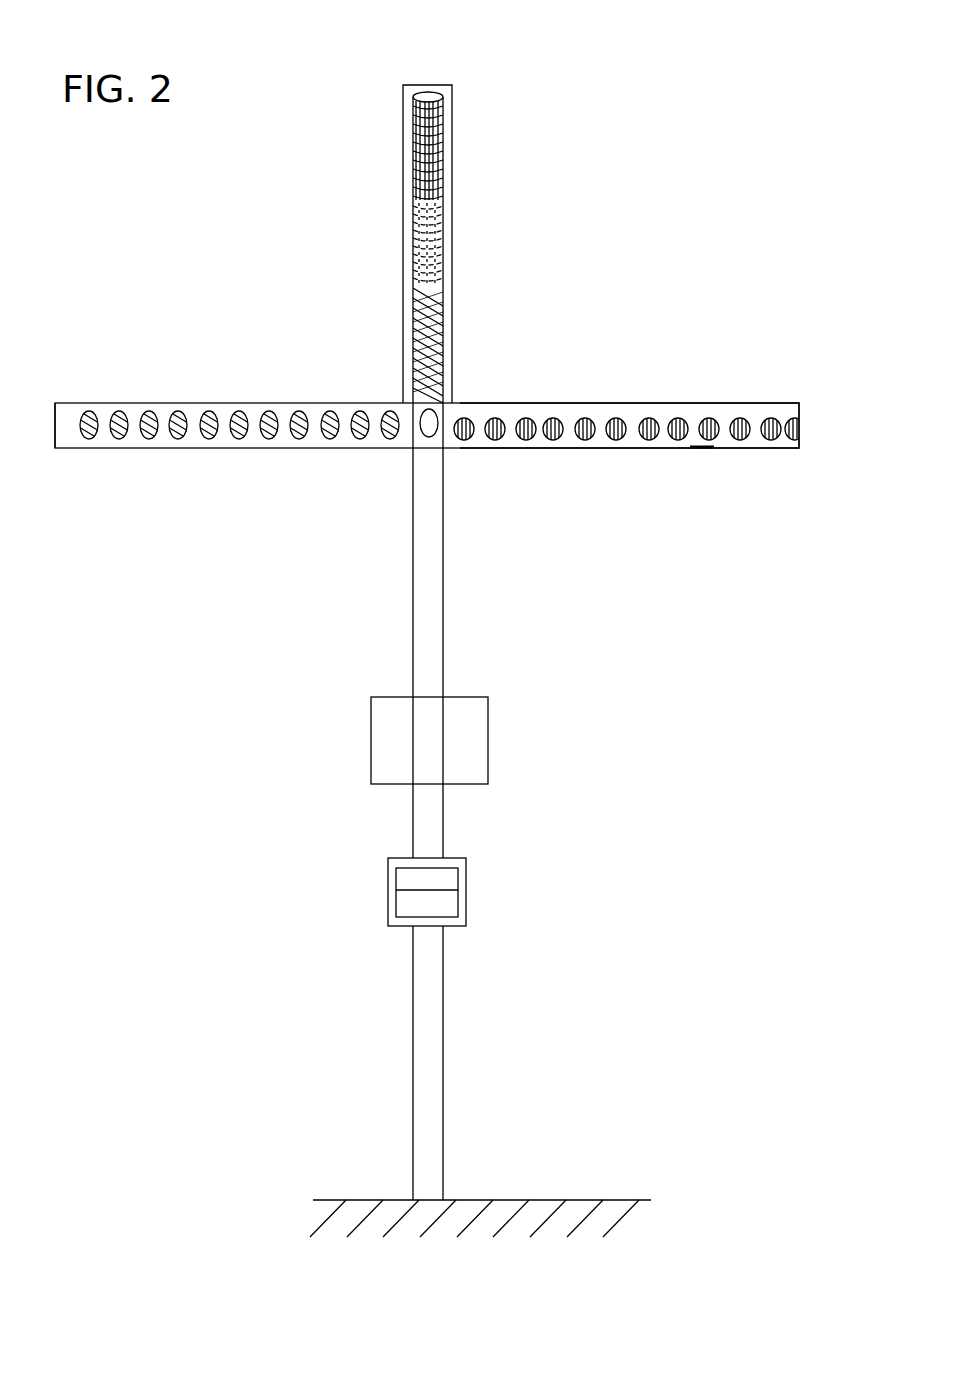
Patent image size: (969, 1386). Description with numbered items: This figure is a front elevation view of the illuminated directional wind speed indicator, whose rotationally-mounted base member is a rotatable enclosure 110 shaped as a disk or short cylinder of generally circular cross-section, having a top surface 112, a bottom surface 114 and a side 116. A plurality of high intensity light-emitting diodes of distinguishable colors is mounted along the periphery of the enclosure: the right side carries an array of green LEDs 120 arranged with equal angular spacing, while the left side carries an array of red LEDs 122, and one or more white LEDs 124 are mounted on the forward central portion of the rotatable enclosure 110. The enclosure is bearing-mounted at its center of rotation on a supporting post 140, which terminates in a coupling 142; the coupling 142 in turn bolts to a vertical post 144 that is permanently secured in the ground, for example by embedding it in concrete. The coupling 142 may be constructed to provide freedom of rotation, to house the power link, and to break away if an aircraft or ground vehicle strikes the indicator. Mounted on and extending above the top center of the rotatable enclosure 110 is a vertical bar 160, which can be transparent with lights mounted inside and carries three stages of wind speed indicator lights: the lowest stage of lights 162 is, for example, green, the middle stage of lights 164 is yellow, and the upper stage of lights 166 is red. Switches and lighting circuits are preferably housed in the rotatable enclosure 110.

The rotatable enclosure 110 is at (121, 401).
The top surface 112 is at (698, 400).
The bottom surface 114 is at (700, 453).
The side 116 is at (53, 411).
The green LEDs 120 is at (208, 410).
The red LEDs 122 is at (547, 408).
The white LEDs 124 is at (429, 441).
The supporting post 140 is at (446, 591).
The coupling 142 is at (475, 881).
The vertical post 144 is at (448, 1003).
The vertical bar 160 is at (458, 142).
The lowest stage of lights 162 is at (410, 349).
The middle stage of lights 164 is at (410, 243).
The upper stage of lights 166 is at (410, 146).